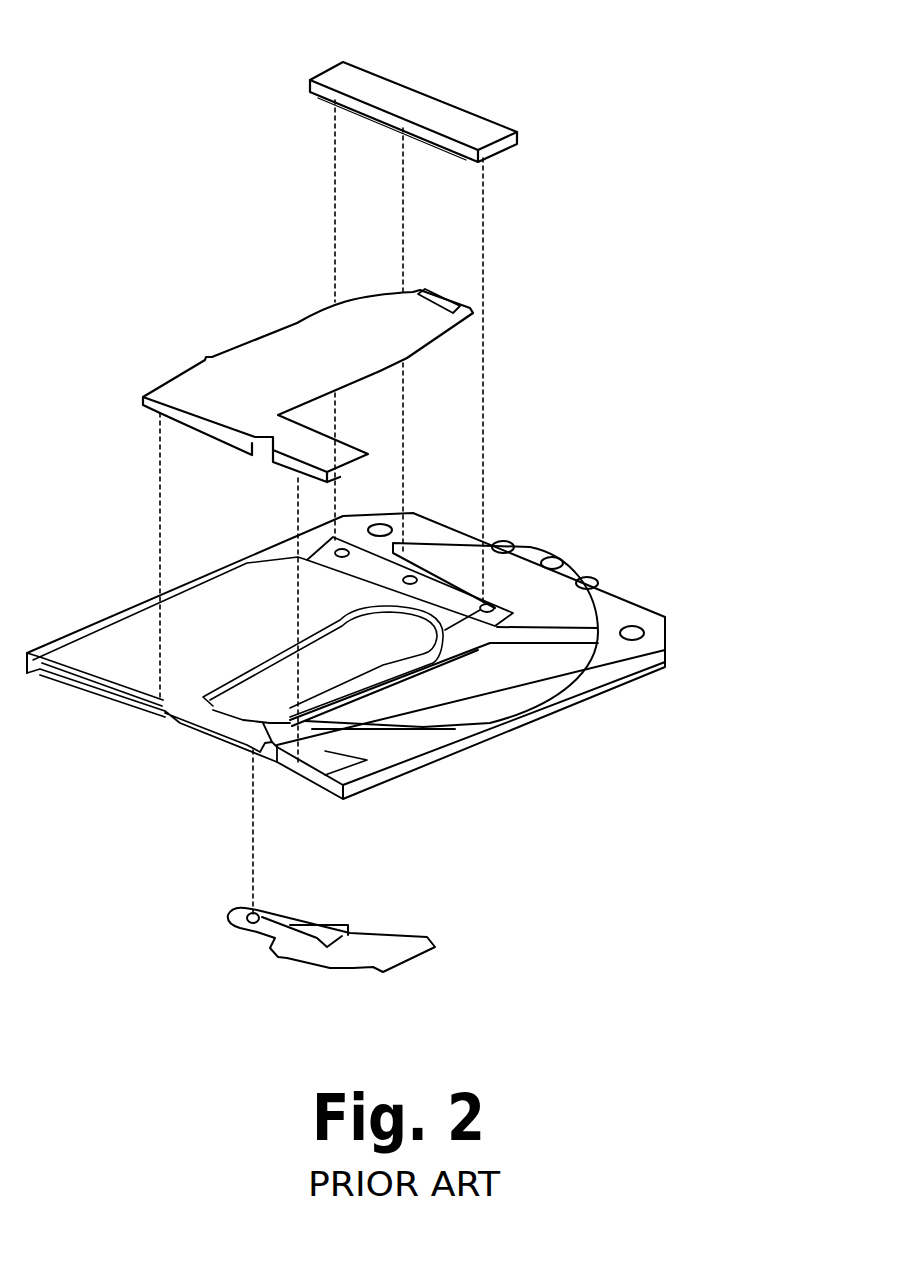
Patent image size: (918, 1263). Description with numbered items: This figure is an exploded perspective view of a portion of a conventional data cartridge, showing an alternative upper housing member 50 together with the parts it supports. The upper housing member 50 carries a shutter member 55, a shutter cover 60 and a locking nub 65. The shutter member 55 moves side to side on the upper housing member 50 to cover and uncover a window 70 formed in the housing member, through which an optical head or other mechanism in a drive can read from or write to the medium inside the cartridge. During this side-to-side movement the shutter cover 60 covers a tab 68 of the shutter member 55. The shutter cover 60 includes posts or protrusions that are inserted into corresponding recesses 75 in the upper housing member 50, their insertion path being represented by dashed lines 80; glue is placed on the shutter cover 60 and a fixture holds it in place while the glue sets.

The upper housing member 50 is at (657, 638).
The shutter member 55 is at (180, 390).
The shutter cover 60 is at (352, 72).
The locking nub 65 is at (325, 958).
The tab 68 is at (447, 297).
The window 70 is at (240, 693).
The recesses 75 is at (497, 612).
The dashed lines 80 is at (485, 383).